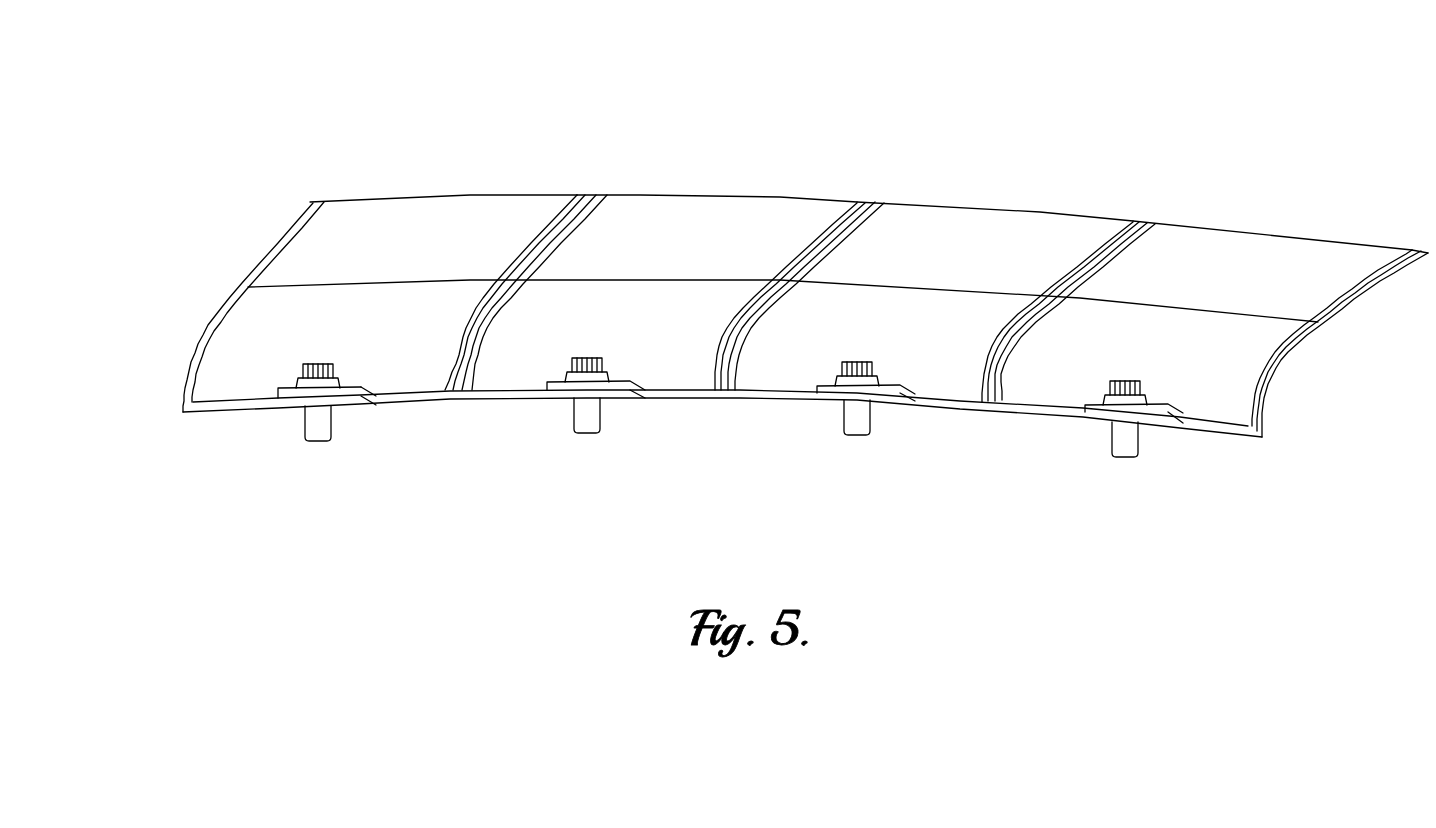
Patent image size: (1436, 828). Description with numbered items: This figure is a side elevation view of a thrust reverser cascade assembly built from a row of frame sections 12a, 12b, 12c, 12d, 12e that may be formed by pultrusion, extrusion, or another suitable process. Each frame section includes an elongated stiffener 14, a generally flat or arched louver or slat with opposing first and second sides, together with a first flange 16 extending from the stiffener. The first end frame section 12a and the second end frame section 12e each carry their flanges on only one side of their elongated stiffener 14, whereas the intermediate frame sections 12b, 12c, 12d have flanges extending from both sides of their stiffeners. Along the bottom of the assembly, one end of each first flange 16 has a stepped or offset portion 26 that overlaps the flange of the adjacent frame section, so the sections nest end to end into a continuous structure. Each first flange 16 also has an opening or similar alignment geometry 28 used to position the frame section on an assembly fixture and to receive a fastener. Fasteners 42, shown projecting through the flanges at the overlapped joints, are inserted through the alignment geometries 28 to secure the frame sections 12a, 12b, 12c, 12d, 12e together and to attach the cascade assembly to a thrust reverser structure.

The first end frame section 12a is at (280, 185).
The intermediate frame section 12b is at (556, 170).
The intermediate frame section 12c is at (822, 180).
The intermediate frame section 12d is at (1109, 197).
The second end frame section 12e is at (1387, 224).
The elongated stiffener 14 is at (234, 250).
The first flange 16 is at (220, 435).
The stepped or offset portion 26 is at (363, 367).
The alignment geometry 28 is at (358, 425).
The fastener 42 is at (317, 344).